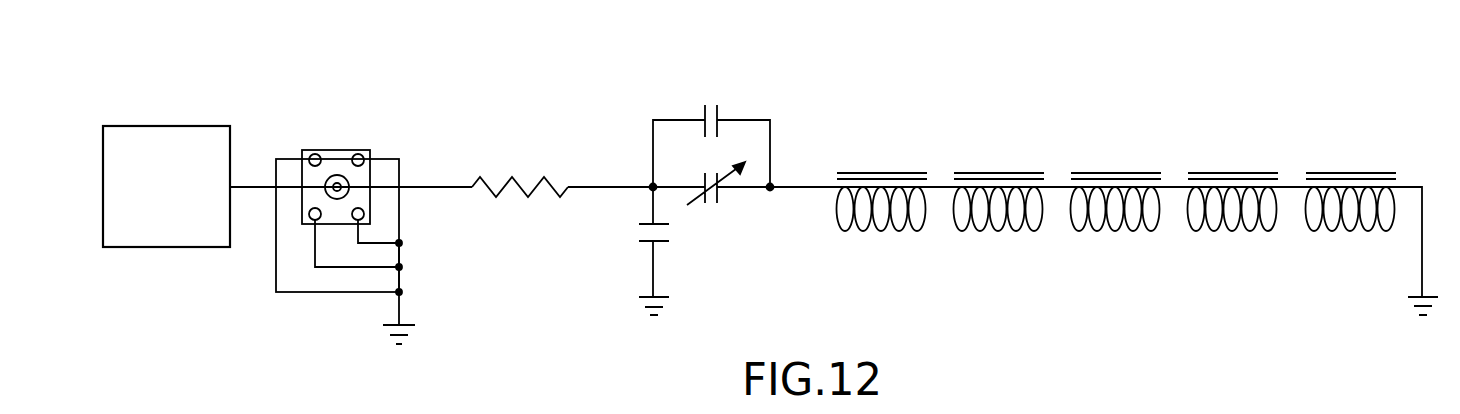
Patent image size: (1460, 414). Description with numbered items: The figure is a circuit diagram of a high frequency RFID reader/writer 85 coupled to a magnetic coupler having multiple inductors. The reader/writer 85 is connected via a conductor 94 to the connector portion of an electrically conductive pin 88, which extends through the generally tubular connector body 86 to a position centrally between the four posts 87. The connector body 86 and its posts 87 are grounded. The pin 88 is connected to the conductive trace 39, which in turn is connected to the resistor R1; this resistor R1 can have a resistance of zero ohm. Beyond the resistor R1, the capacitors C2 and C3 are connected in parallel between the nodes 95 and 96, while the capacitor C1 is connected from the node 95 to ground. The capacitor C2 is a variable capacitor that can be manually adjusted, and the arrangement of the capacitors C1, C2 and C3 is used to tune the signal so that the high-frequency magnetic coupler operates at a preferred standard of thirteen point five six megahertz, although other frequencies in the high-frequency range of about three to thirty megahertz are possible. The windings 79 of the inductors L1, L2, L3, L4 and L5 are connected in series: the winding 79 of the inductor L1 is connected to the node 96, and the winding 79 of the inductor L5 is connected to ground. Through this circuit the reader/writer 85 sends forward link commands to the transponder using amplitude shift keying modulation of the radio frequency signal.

The RFID reader/writer 85 is at (165, 248).
The conductor 94 is at (253, 187).
The body 86 is at (338, 209).
The posts 87 is at (314, 154).
The pin 88 is at (338, 176).
The conductive trace 39 is at (437, 187).
The resistor R1 is at (555, 187).
The node 95 is at (652, 187).
The capacitor C1 is at (647, 243).
The variable capacitor C2 is at (720, 197).
The capacitor C3 is at (720, 113).
The node 96 is at (773, 187).
The inductor L1 is at (903, 160).
The inductor L2 is at (1023, 160).
The inductor L3 is at (1141, 160).
The inductor L4 is at (1258, 160).
The inductor L5 is at (1374, 160).
The windings 79 is at (1119, 192).